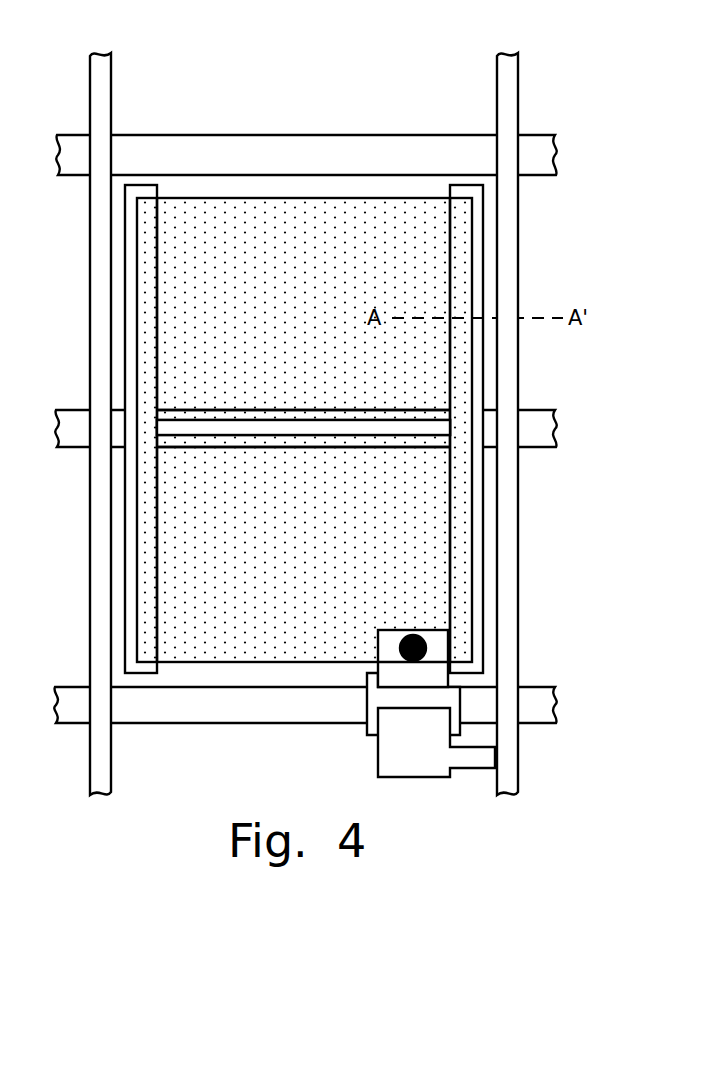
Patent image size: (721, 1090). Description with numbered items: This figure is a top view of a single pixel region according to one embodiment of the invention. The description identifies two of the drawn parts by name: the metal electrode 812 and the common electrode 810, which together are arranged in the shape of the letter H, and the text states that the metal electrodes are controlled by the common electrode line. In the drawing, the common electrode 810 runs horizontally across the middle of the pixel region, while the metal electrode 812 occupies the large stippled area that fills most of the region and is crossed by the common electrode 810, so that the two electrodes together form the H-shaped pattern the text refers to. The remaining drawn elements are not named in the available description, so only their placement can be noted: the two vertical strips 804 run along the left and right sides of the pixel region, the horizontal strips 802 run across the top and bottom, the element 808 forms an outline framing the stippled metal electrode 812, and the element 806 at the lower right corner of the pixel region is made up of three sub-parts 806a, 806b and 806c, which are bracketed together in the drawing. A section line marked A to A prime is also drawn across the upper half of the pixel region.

The scan line 802 is at (548, 157).
The data line 804 is at (103, 63).
The thin film transistor 806 is at (530, 703).
The gate electrode 806a is at (438, 700).
The source electrode 806b is at (435, 662).
The drain electrode 806c is at (438, 757).
The metal electrode 808 is at (135, 337).
The common electrode 810 is at (550, 432).
The metal electrode 812 is at (148, 232).